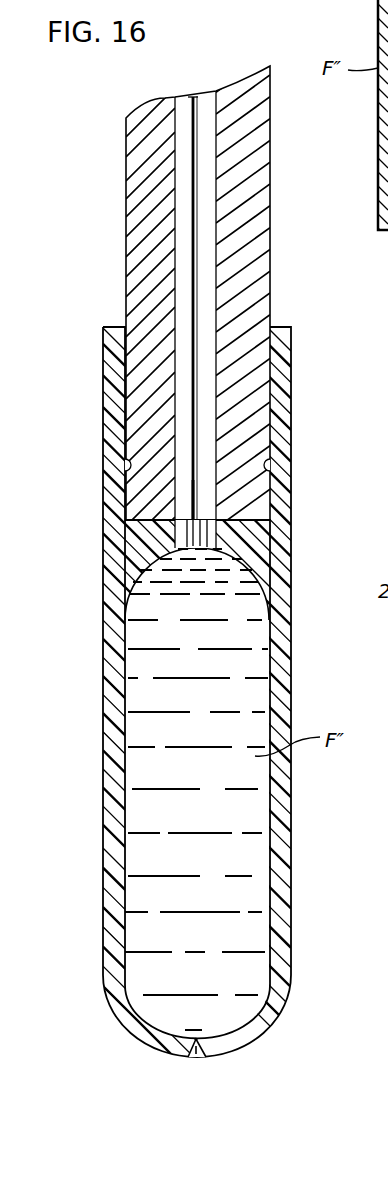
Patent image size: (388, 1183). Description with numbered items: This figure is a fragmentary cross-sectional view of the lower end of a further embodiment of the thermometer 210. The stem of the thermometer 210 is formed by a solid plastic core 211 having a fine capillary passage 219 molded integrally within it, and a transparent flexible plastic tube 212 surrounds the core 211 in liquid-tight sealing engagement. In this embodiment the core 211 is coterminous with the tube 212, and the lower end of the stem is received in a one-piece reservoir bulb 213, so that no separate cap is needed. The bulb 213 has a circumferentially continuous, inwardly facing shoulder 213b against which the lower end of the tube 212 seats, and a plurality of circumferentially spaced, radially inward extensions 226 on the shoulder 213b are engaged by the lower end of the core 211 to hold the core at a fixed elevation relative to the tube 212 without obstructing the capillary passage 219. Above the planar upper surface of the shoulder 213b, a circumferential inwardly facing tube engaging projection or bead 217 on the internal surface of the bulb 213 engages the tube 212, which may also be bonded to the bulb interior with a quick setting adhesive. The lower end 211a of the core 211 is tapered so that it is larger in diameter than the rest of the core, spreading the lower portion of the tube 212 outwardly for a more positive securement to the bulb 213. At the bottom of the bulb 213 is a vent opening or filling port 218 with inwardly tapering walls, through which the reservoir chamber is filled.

The thermometer 210 is at (106, 251).
The solid plastic core 211 is at (205, 205).
The lower end of core 211a is at (190, 489).
The transparent flexible plastic tube 212 is at (148, 152).
The one-piece reservoir bulb 213 is at (112, 750).
The shoulder 213b is at (247, 543).
The tube engaging projection or bead 217 is at (272, 466).
The vent opening or filling port 218 is at (195, 1061).
The capillary passage 219 is at (185, 103).
The extensions 226 is at (185, 535).